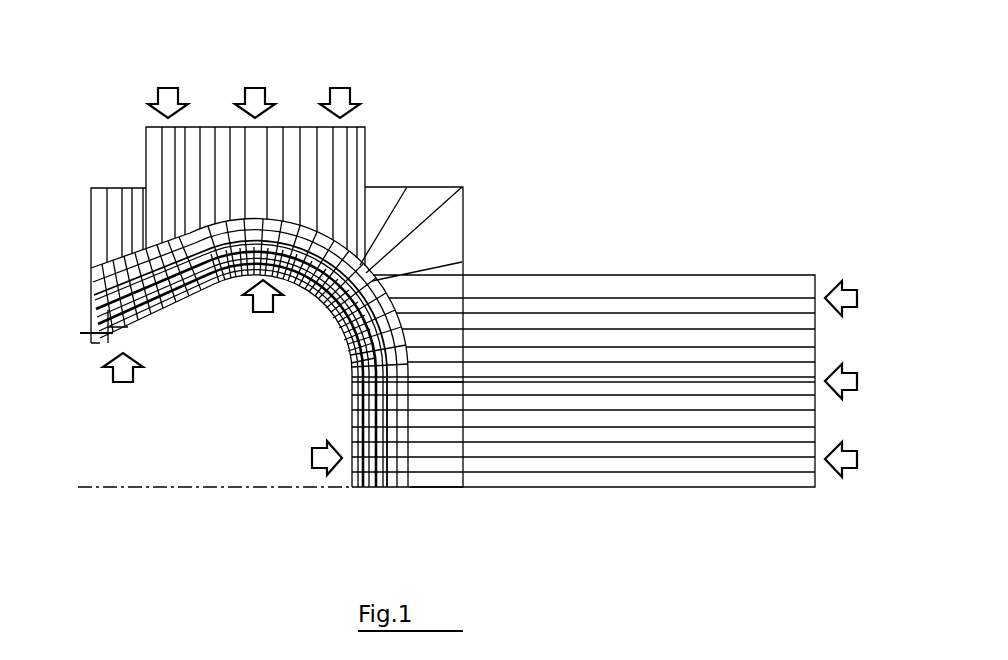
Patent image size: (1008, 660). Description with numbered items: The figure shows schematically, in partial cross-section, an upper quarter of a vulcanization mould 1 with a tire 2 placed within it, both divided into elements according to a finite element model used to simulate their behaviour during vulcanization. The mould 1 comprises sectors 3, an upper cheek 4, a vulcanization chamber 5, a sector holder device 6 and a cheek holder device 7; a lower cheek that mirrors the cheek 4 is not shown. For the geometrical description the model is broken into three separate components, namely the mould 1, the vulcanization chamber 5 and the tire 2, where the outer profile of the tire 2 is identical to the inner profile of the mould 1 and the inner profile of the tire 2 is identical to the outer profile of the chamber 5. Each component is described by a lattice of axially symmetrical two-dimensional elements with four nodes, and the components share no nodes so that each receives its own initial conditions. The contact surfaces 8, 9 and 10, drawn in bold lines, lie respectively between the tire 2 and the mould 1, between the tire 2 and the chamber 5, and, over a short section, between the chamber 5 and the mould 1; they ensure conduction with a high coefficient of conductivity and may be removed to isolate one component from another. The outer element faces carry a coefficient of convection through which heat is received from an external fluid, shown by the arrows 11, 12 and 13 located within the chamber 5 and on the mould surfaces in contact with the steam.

The vulcanization mould 1 is at (474, 218).
The tire 2 is at (372, 488).
The sectors 3 is at (433, 488).
The upper cheek 4 is at (91, 243).
The vulcanization chamber 5 is at (342, 349).
The sector holder device 6 is at (592, 275).
The cheek holder device 7 is at (367, 145).
The contact surface 8 is at (440, 345).
The contact surface 9 is at (322, 283).
The contact surface 10 is at (100, 345).
The arrows 11 is at (263, 313).
The arrows 12 is at (168, 88).
The arrows 13 is at (857, 298).